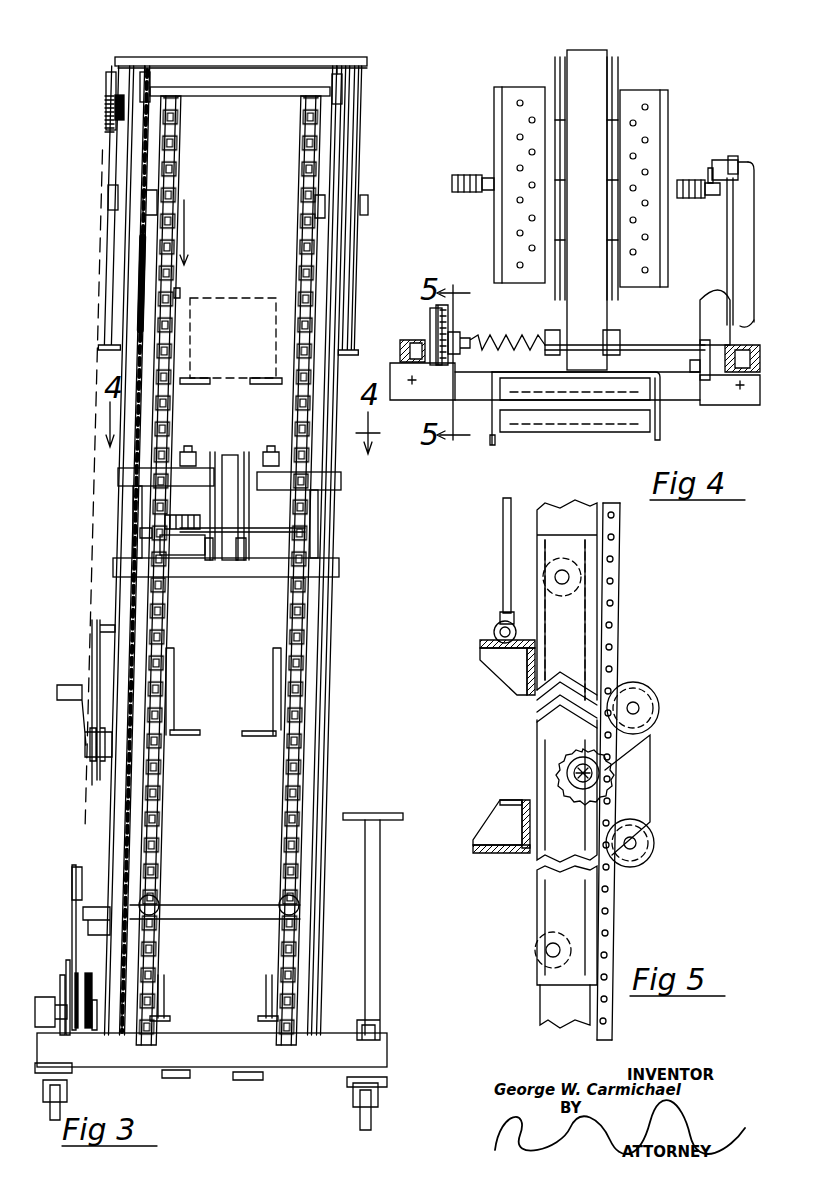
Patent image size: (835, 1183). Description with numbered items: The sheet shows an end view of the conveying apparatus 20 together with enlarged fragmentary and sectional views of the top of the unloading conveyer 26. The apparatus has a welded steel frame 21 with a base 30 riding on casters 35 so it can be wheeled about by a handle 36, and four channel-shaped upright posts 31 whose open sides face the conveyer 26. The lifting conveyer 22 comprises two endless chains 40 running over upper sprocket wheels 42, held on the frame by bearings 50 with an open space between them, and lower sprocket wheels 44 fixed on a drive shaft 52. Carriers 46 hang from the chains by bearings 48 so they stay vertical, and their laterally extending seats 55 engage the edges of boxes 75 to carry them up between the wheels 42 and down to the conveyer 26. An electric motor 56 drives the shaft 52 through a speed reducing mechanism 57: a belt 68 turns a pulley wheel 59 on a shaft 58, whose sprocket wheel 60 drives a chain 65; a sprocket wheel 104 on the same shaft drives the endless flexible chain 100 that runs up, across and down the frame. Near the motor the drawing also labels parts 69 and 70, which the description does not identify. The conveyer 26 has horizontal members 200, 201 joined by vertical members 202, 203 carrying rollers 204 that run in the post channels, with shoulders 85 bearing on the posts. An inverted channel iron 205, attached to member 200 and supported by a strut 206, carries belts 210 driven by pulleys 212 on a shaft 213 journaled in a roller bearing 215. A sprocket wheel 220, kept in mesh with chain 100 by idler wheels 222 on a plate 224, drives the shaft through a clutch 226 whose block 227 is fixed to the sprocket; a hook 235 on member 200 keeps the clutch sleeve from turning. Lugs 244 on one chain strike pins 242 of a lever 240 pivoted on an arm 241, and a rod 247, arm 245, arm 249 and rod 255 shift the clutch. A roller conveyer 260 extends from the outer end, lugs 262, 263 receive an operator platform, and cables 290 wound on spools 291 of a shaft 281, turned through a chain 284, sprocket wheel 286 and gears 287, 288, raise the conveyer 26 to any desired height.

In FIG. 3, the conveying apparatus 20 is at (262, 1128).
In FIG. 3, the frame 21 is at (330, 681).
In FIG. 3, the conveyer 22 is at (299, 125).
In FIG. 4, the conveyer 22 is at (460, 175).
In FIG. 3, the conveyer 26 is at (130, 474).
In FIG. 4, the conveyer 26 is at (590, 418).
In FIG. 3, the base 30 is at (370, 1060).
In FIG. 3, the upright posts 31 is at (327, 731).
In FIG. 4, the upright posts 31 is at (402, 352).
In FIG. 5, the upright posts 31 is at (557, 516).
In FIG. 3, the casters 35 is at (48, 1108).
In FIG. 3, the handle 36 is at (374, 850).
In FIG. 3, the endless chains 40 is at (160, 803).
In FIG. 4, the endless chains 40 is at (456, 192).
In FIG. 3, the sprocket wheels 42 is at (322, 205).
In FIG. 3, the sprocket wheels 44 is at (288, 900).
In FIG. 3, the carriers 46 is at (272, 676).
In FIG. 4, the carriers 46 is at (496, 125).
In FIG. 3, the bearings 48 is at (178, 292).
In FIG. 4, the bearings 48 is at (485, 192).
In FIG. 3, the bearings 50 is at (108, 192).
In FIG. 3, the drive shaft 52 is at (218, 912).
In FIG. 3, the seats 55 is at (262, 384).
In FIG. 4, the seats 55 is at (510, 105).
In FIG. 3, the electric motor 56 is at (92, 862).
In FIG. 3, the speed reducing mechanism 57 is at (60, 992).
In FIG. 3, the shaft 58 is at (35, 1016).
In FIG. 3, the pulley wheel 59 is at (66, 982).
In FIG. 3, the sprocket wheel 60 is at (94, 1032).
In FIG. 3, the chain 65 is at (88, 975).
In FIG. 3, the belt 68 is at (75, 952).
In FIG. 3, the bearing block 69 is at (84, 912).
In FIG. 3, the bracket 70 is at (72, 877).
In FIG. 3, the boxes 75 is at (238, 322).
In FIG. 4, the shoulders 85 is at (392, 375).
In FIG. 5, the shoulders 85 is at (500, 660).
In FIG. 3, the endless flexible chain 100 is at (122, 801).
In FIG. 5, the endless flexible chain 100 is at (612, 577).
In FIG. 3, the sprocket wheel 104 is at (124, 1030).
In FIG. 3, the member 200 is at (322, 485).
In FIG. 4, the member 200 is at (718, 400).
In FIG. 5, the member 200 is at (528, 682).
In FIG. 3, the member 201 is at (322, 570).
In FIG. 5, the member 201 is at (490, 853).
In FIG. 3, the vertical member 202 is at (318, 521).
In FIG. 4, the vertical member 202 is at (705, 400).
In FIG. 3, the vertical member 203 is at (134, 508).
In FIG. 4, the vertical member 203 is at (436, 365).
In FIG. 5, the vertical member 203 is at (575, 545).
In FIG. 4, the rollers 204 is at (414, 348).
In FIG. 5, the rollers 204 is at (545, 577).
In FIG. 3, the inverted channel iron 205 is at (228, 470).
In FIG. 4, the inverted channel iron 205 is at (587, 55).
In FIG. 3, the strut 206 is at (247, 462).
In FIG. 3, the belts 210 is at (212, 462).
In FIG. 4, the belts 210 is at (556, 72).
In FIG. 3, the pulleys 212 is at (210, 560).
In FIG. 4, the pulleys 212 is at (545, 335).
In FIG. 3, the shaft 213 is at (244, 560).
In FIG. 4, the shaft 213 is at (685, 344).
In FIG. 5, the shaft 213 is at (622, 768).
In FIG. 4, the roller bearing 215 is at (707, 305).
In FIG. 5, the sprocket wheel 220 is at (560, 768).
In FIG. 4, the idler wheels 222 is at (436, 312).
In FIG. 5, the idler wheels 222 is at (648, 700).
In FIG. 5, the plate 224 is at (638, 785).
In FIG. 4, the clutch 226 is at (470, 340).
In FIG. 5, the clutch block 227 is at (573, 775).
In FIG. 3, the hook 235 is at (165, 522).
In FIG. 4, the lever 240 is at (748, 162).
In FIG. 4, the arm 241 is at (727, 248).
In FIG. 4, the pins 242 is at (732, 158).
In FIG. 4, the lugs 244 is at (710, 178).
In FIG. 4, the arm 245 is at (752, 320).
In FIG. 4, the rod 247 is at (753, 275).
In FIG. 4, the arm 249 is at (697, 370).
In FIG. 3, the rod 255 is at (273, 526).
In FIG. 4, the rod 255 is at (660, 344).
In FIG. 4, the roller conveyer 260 is at (492, 446).
In FIG. 3, the lugs 262 is at (162, 538).
In FIG. 3, the lugs 263 is at (140, 555).
In FIG. 3, the shaft 281 is at (228, 90).
In FIG. 3, the chain 284 is at (100, 236).
In FIG. 3, the sprocket wheel 286 is at (105, 118).
In FIG. 3, the gear 287 is at (114, 106).
In FIG. 3, the gear 288 is at (114, 80).
In FIG. 3, the cables 290 is at (346, 153).
In FIG. 3, the spools 291 is at (145, 76).